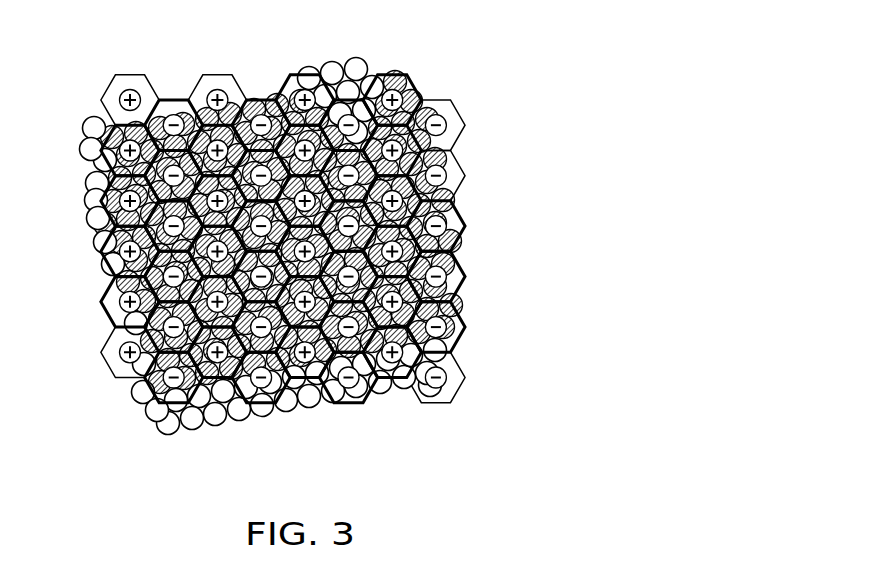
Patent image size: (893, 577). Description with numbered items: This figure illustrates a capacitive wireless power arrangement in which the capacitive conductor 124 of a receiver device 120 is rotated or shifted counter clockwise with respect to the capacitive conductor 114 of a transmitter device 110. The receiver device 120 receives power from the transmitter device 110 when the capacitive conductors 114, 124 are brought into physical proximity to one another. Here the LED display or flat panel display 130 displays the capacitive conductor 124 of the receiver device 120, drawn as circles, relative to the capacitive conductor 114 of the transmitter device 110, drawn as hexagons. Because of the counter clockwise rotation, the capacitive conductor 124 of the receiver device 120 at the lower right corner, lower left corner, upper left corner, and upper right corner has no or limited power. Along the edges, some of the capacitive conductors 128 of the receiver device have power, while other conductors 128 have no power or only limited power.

The transmitter device 110 is at (299, 253).
The LED display or flat panel display 130 is at (332, 272).
The capacitive conductor 114 is at (439, 412).
The receiver device 120 is at (249, 277).
The capacitive conductor 124 is at (152, 436).
The capacitive conductors 128 is at (200, 432).